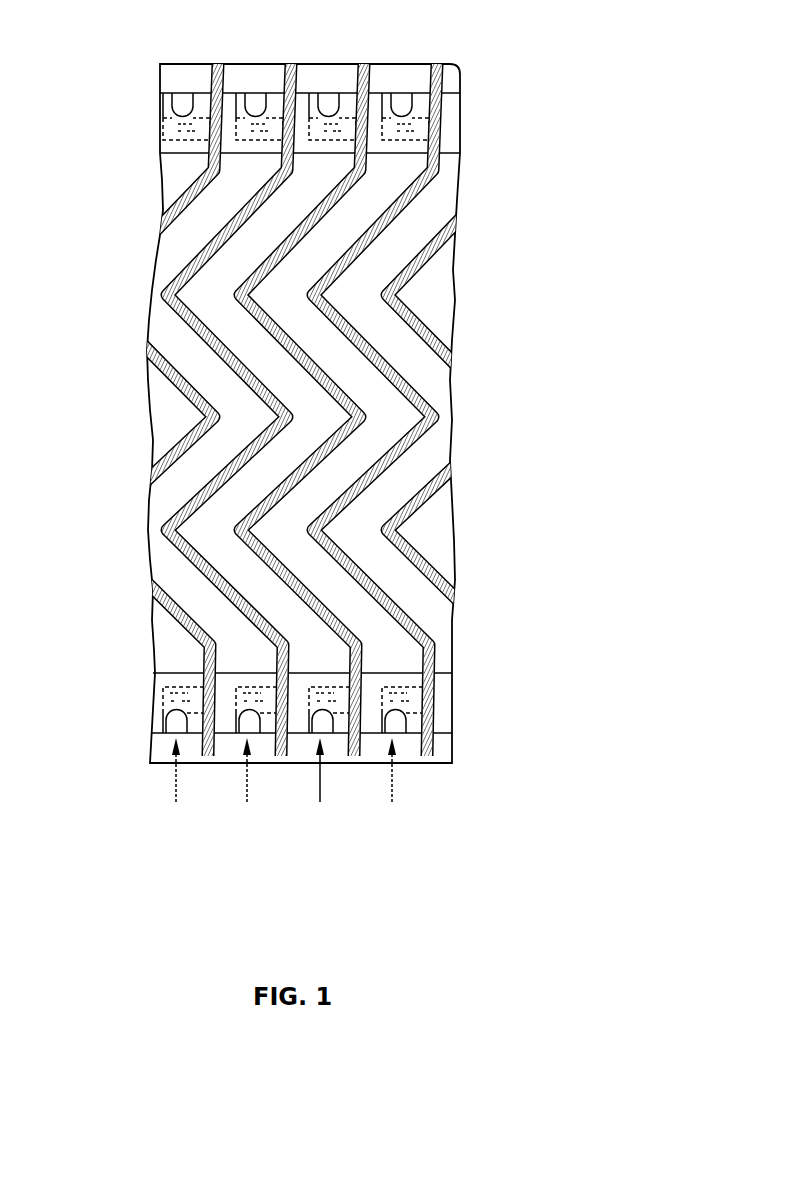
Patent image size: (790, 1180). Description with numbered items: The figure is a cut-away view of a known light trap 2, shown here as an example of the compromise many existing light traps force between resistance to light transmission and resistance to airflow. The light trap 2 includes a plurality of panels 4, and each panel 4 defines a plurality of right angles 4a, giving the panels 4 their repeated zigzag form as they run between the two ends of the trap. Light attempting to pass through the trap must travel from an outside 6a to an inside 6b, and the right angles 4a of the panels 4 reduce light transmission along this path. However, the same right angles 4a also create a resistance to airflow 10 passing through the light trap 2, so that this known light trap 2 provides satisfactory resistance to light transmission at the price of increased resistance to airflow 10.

The light trap 2 is at (521, 745).
The panel 4 is at (345, 385).
The right angle 4a is at (283, 259).
The outside 6a is at (152, 763).
The inside 6b is at (445, 63).
The airflow 10 is at (392, 787).